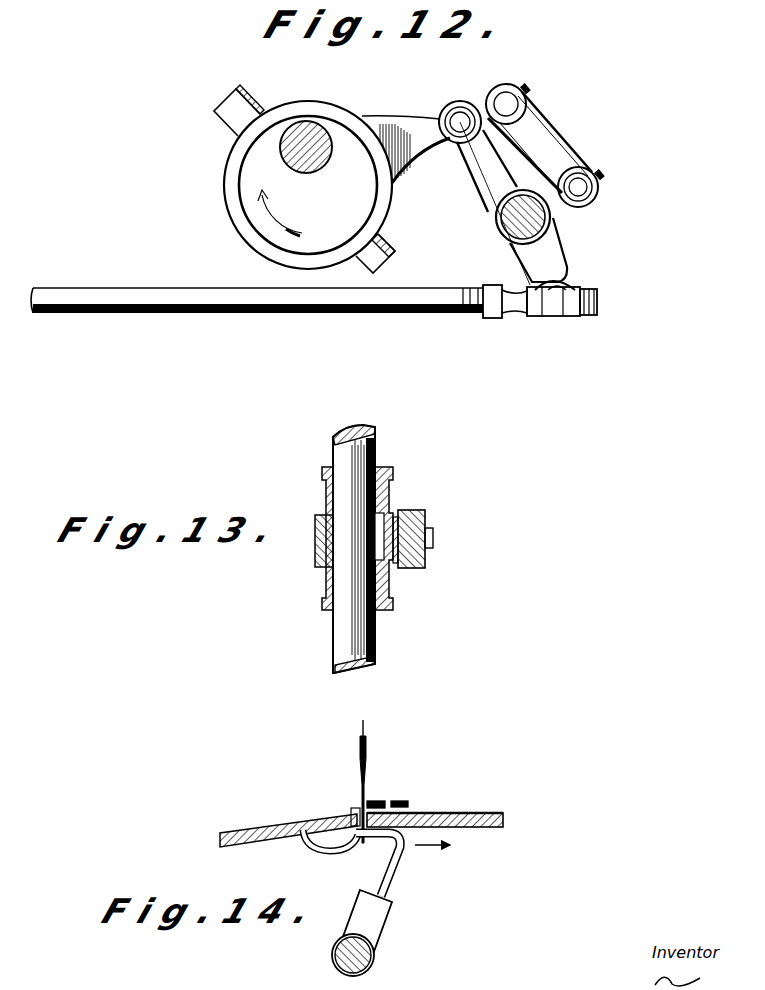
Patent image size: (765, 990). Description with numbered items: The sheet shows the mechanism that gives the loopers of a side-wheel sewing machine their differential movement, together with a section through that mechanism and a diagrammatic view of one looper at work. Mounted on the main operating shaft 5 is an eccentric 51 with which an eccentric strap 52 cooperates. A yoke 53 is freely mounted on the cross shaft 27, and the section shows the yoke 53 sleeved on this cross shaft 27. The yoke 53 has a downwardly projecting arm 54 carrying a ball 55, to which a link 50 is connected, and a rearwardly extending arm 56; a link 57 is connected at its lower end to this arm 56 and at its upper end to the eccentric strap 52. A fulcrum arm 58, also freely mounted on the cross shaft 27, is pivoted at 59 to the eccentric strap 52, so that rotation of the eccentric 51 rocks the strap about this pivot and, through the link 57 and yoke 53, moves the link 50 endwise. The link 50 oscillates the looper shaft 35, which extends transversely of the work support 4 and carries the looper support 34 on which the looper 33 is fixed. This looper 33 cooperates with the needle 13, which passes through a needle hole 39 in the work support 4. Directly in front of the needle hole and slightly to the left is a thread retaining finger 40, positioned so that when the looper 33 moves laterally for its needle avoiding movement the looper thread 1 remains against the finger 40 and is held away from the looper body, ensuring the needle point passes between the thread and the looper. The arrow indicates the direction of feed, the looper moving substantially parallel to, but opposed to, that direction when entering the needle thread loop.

In FIG. 14, the looper thread 1 is at (430, 812).
In FIG. 14, the work support 4 is at (490, 806).
In FIG. 12, the main operating shaft 5 is at (302, 130).
In FIG. 12, the needle 13 is at (560, 197).
In FIG. 14, the needle 13 is at (372, 757).
In FIG. 12, the cross shaft 27 is at (558, 232).
In FIG. 13, the cross shaft 27 is at (383, 549).
In FIG. 14, the looper 33 is at (392, 870).
In FIG. 14, the looper support 34 is at (377, 910).
In FIG. 14, the looper shaft 35 is at (378, 955).
In FIG. 14, the needle hole 39 is at (352, 810).
In FIG. 14, the thread retaining finger 40 is at (352, 822).
In FIG. 12, the link 50 is at (309, 302).
In FIG. 12, the eccentric 51 is at (304, 179).
In FIG. 12, the eccentric strap 52 is at (357, 133).
In FIG. 12, the yoke 53 is at (523, 243).
In FIG. 13, the yoke 53 is at (392, 496).
In FIG. 12, the downwardly projecting arm 54 is at (548, 266).
In FIG. 12, the ball 55 is at (556, 316).
In FIG. 12, the rearwardly extending arm 56 is at (585, 207).
In FIG. 13, the rearwardly extending arm 56 is at (435, 537).
In FIG. 12, the link 57 is at (538, 135).
In FIG. 13, the link 57 is at (424, 520).
In FIG. 12, the fulcrum arm 58 is at (480, 163).
In FIG. 13, the fulcrum arm 58 is at (320, 548).
In FIG. 12, the pivot 59 is at (460, 122).